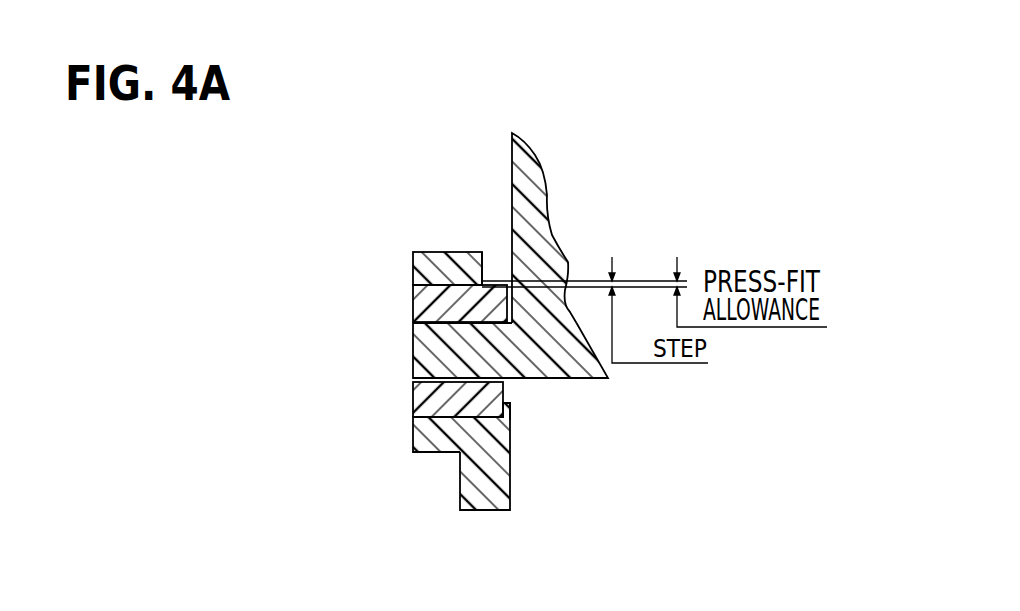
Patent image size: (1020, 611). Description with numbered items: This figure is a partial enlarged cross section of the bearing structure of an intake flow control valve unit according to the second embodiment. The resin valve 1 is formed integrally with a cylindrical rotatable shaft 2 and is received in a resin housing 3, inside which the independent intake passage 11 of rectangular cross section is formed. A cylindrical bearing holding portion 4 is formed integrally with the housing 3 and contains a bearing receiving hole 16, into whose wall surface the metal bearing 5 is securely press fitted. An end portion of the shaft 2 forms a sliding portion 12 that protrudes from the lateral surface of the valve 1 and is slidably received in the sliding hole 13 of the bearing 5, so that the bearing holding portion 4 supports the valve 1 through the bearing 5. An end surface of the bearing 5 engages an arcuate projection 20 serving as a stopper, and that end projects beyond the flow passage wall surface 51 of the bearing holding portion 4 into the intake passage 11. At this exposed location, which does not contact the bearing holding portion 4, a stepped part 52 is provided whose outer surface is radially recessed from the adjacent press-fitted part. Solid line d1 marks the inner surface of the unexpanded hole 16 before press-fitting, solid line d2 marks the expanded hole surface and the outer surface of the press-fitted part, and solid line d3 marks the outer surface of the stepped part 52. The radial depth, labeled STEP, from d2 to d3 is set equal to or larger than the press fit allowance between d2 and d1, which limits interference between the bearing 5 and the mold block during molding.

The valve 1 is at (514, 178).
The rotatable shaft 2 is at (426, 358).
The housing 3 is at (463, 494).
The bearing holding portion 4 is at (438, 253).
The bearing 5 is at (428, 308).
The independent intake passage 11 is at (580, 445).
The sliding portion 12 is at (420, 416).
The sliding hole 13 is at (432, 324).
The bearing receiving hole 16 is at (428, 288).
The arcuate projection 20 is at (507, 403).
The flow passage wall surface 51 is at (487, 266).
The stepped part 52 is at (496, 284).
The solid line d1 is at (643, 292).
The solid line d2 is at (647, 276).
The solid line d3 is at (587, 292).